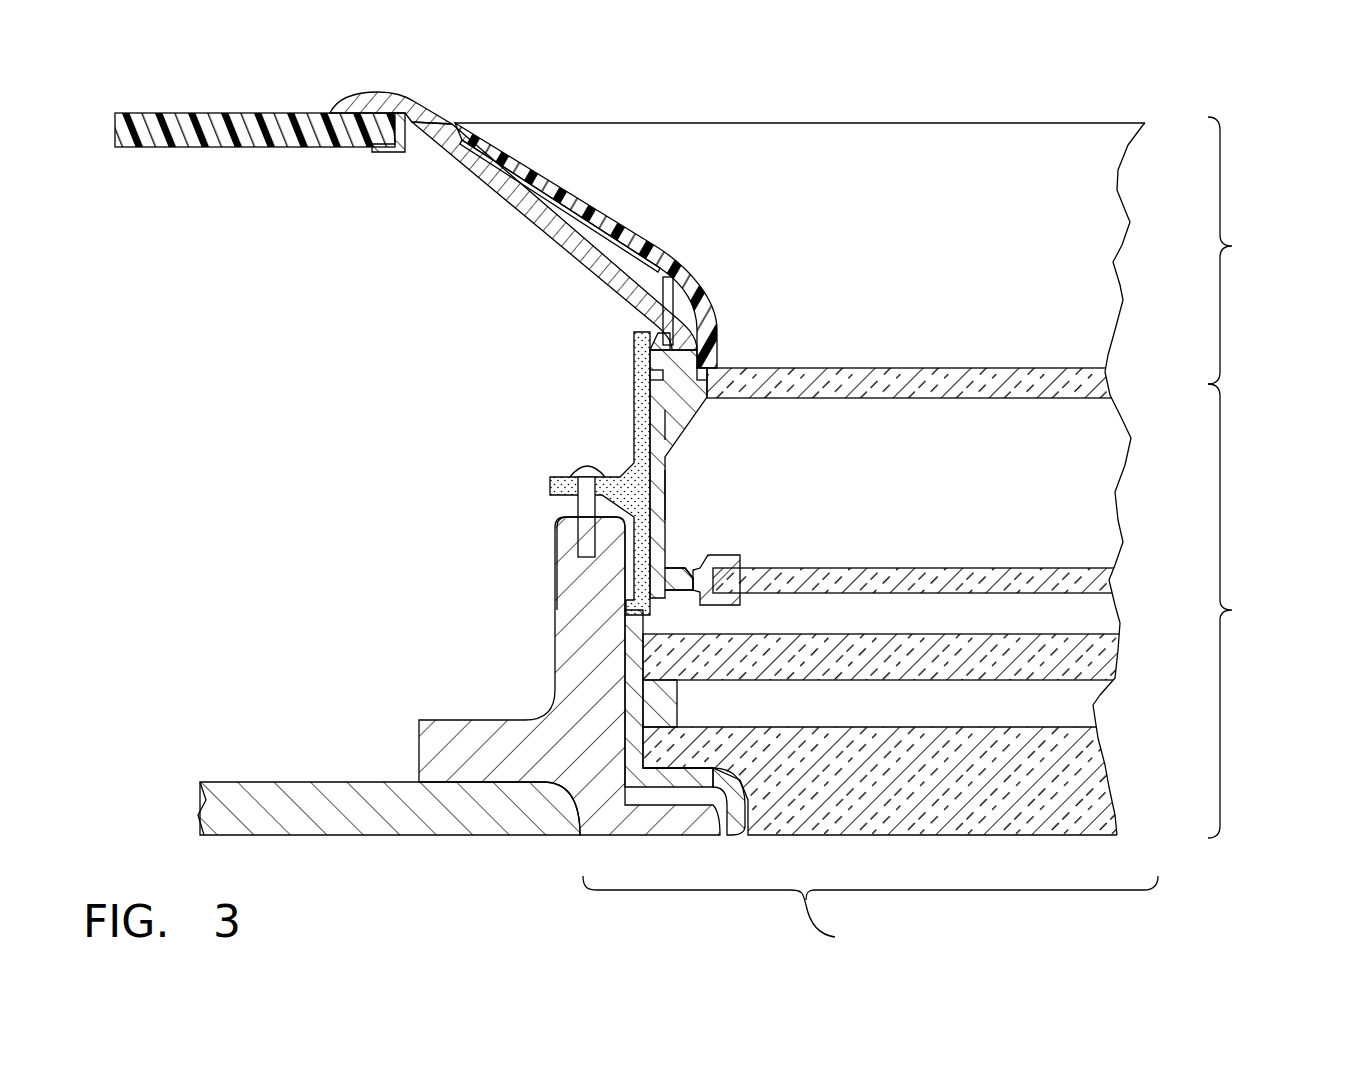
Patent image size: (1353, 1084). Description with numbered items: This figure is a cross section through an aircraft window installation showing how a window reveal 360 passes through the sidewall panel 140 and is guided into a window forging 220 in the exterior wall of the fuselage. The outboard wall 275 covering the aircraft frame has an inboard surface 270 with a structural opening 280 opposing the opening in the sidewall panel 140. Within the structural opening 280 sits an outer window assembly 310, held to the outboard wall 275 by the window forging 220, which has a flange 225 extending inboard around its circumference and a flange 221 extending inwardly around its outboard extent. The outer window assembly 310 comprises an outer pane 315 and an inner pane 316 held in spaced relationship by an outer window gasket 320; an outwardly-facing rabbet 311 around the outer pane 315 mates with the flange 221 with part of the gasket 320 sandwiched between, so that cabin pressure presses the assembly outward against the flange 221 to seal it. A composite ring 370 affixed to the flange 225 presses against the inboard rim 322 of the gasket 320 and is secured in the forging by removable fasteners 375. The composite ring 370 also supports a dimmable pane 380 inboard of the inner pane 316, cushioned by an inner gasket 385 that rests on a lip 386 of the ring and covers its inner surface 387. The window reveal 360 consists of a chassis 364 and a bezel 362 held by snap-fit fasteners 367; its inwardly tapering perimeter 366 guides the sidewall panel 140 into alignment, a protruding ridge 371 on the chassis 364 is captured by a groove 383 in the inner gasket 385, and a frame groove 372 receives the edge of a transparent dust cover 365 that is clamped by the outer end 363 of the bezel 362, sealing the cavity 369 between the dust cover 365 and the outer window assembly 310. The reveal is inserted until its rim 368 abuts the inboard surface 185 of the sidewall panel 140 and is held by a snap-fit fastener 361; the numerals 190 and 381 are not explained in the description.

The sidewall panel 140 is at (255, 155).
The inboard surface of the sidewall panel 185 is at (255, 130).
The panel core 190 is at (249, 147).
The window forging 220 is at (524, 676).
The flange 221 is at (707, 820).
The flange 225 is at (575, 592).
The inboard surface 270 is at (389, 807).
The outboard wall 275 is at (300, 822).
The structural opening 280 is at (870, 914).
The outer window assembly 310 is at (1232, 610).
The rabbet 311 is at (680, 770).
The outer pane 315 is at (1090, 773).
The inner pane 316 is at (1092, 651).
The outer window gasket 320 is at (660, 703).
The inboard rim 322 is at (636, 746).
The window reveal 360 is at (1232, 246).
The snap-fit fastener 361 is at (395, 152).
The bezel 362 is at (957, 217).
The outer end 363 is at (717, 343).
The chassis 364 is at (520, 213).
The dust cover 365 is at (885, 368).
The inwardly tapering perimeter 366 is at (554, 239).
The snap-fit fasteners 367 is at (523, 180).
The rim 368 is at (397, 90).
The cavity 369 is at (968, 481).
The composite ring 370 is at (655, 483).
The protruding ridge 371 is at (655, 345).
The frame groove 372 is at (712, 369).
The removable fasteners 375 is at (577, 505).
The dimmable pane 380 is at (923, 549).
The fastening plate 381 is at (732, 557).
The groove 383 is at (656, 378).
The inner gasket 385 is at (667, 490).
The lip 386 is at (666, 604).
The inner surface 387 is at (660, 425).